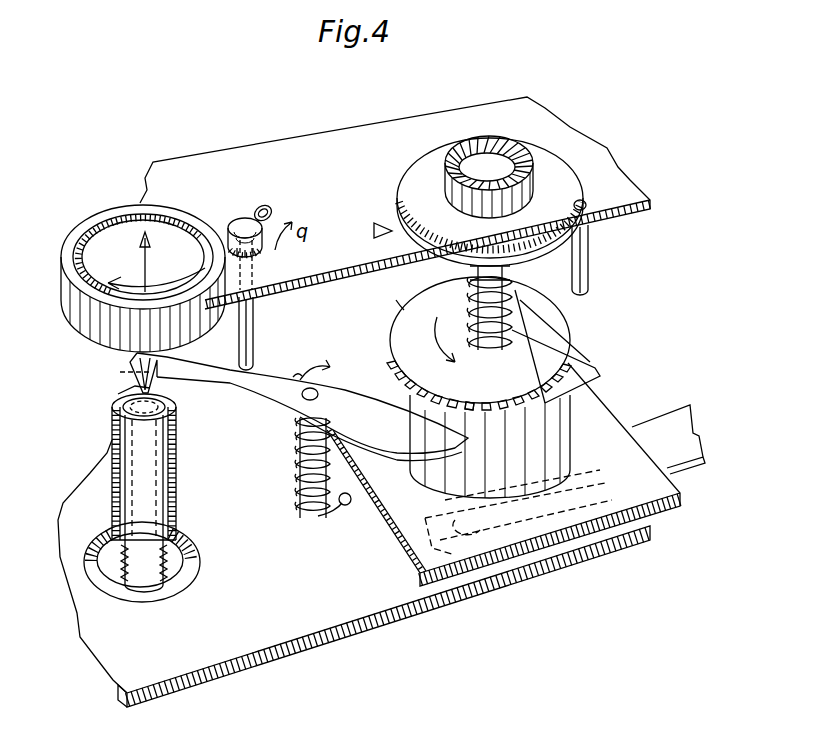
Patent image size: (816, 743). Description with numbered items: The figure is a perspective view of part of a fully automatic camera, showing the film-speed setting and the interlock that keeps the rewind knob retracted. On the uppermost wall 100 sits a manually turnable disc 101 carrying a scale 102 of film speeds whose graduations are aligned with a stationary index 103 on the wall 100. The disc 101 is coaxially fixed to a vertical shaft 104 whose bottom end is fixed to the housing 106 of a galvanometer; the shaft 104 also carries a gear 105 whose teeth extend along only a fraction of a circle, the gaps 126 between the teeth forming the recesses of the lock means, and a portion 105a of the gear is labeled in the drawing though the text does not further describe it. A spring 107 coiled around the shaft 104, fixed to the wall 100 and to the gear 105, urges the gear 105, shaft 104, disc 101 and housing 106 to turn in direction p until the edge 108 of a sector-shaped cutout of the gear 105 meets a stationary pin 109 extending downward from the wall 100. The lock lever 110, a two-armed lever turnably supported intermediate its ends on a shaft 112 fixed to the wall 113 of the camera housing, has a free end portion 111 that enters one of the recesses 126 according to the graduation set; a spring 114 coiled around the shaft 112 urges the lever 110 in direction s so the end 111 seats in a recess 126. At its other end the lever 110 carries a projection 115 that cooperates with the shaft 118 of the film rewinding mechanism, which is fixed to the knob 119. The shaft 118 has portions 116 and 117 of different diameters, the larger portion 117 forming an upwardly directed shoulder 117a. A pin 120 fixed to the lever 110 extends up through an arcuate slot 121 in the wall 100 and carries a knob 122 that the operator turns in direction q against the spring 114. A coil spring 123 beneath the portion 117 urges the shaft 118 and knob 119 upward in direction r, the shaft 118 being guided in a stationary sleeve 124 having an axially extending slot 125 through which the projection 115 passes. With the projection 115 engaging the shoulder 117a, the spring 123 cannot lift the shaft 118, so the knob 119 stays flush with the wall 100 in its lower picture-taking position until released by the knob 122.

The uppermost wall 100 is at (610, 190).
The disc 101 is at (562, 183).
The scale 102 is at (400, 192).
The stationary index 103 is at (373, 232).
The vertical shaft 104 is at (495, 322).
The gear 105 is at (457, 343).
The tooth of ratchet wheel 105a is at (398, 310).
The housing of a galvanometer 106 is at (548, 390).
The spring 107 is at (467, 286).
The edge of sector-shaped cutout 108 is at (525, 368).
The stationary pin 109 is at (578, 267).
The lock lever 110 is at (277, 387).
The free end portion 111 is at (445, 437).
The shaft 112 is at (302, 468).
The wall of the camera housing 113 is at (362, 605).
The spring 114 is at (298, 472).
The projection 115 is at (140, 387).
The shaft portion 116 is at (120, 375).
The shaft portion 117 is at (145, 495).
The shoulder 117a is at (168, 412).
The shaft 118 is at (150, 562).
The knob 119 is at (133, 230).
The pin 120 is at (248, 310).
The arcuate slot 121 is at (267, 203).
The knob 122 is at (240, 222).
The coil spring 123 is at (168, 543).
The stationary sleeve 124 is at (173, 463).
The axially extending slot 125 is at (123, 390).
The gaps 126 is at (476, 405).